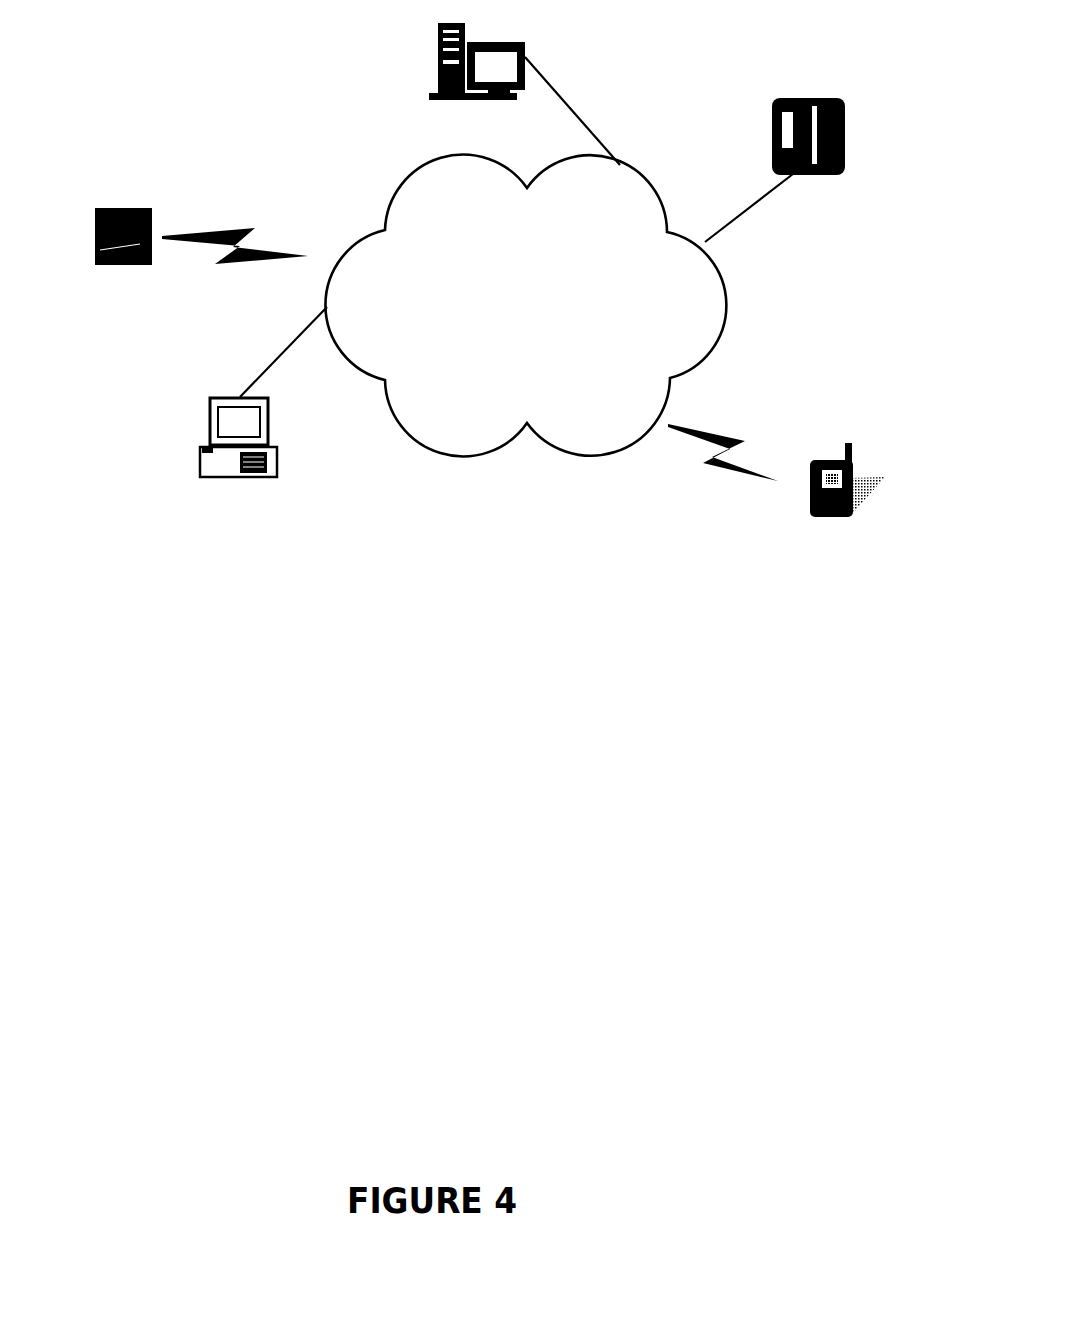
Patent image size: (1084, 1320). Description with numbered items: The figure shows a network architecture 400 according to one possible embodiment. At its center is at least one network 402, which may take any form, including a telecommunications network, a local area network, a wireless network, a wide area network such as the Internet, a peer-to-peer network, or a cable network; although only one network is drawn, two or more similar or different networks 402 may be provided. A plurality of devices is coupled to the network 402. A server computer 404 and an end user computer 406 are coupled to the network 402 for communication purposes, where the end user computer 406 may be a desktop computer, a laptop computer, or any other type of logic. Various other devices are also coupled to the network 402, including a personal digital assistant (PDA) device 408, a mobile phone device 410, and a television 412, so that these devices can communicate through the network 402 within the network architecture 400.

The network architecture 400 is at (434, 758).
The network 402 is at (585, 455).
The server computer 404 is at (438, 60).
The end user computer 406 is at (200, 453).
The personal digital assistant (PDA) device 408 is at (123, 209).
The mobile phone device 410 is at (808, 462).
The television 412 is at (788, 93).